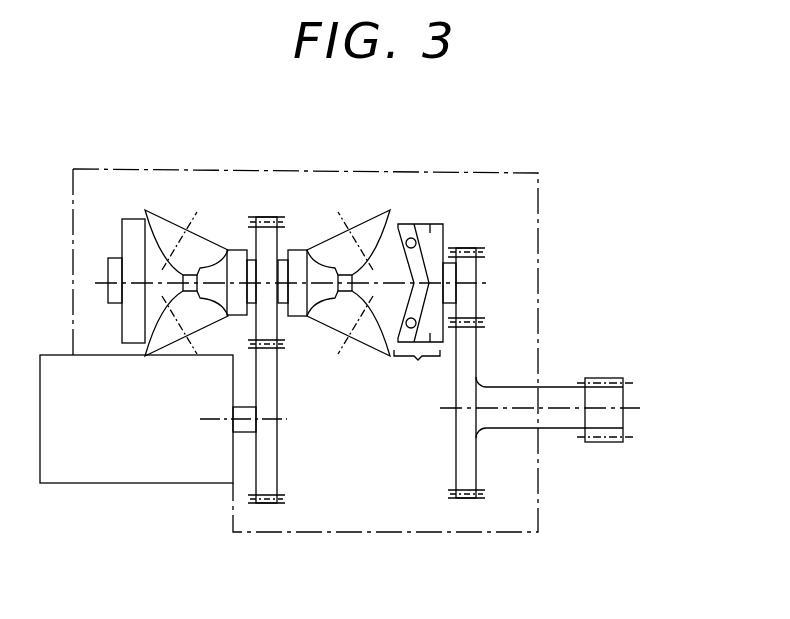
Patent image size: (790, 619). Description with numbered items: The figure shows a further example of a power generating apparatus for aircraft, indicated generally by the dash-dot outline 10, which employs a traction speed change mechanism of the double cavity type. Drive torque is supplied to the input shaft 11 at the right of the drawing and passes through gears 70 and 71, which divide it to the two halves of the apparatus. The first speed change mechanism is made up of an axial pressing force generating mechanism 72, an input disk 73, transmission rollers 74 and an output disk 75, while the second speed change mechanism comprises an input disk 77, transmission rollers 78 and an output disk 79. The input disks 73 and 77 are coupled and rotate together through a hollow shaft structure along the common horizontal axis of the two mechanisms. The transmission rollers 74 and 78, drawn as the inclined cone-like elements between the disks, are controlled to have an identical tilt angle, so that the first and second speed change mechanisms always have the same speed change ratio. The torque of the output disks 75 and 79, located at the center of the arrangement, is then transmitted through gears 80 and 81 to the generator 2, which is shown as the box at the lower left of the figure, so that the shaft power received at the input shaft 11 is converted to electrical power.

The generator 2 is at (93, 474).
The transmission mechanism 10 is at (360, 183).
The input shaft 11 is at (558, 397).
The gear 70 is at (468, 350).
The gear 71 is at (470, 272).
The axial pressing force generating mechanism 72 is at (417, 315).
The input disk 73 is at (405, 223).
The transmission rollers 74 is at (370, 227).
The output disk 75 is at (300, 318).
The input disk 77 is at (133, 245).
The transmission rollers 78 is at (172, 230).
The output disk 79 is at (236, 260).
The gear 80 is at (270, 245).
The gear 81 is at (268, 455).